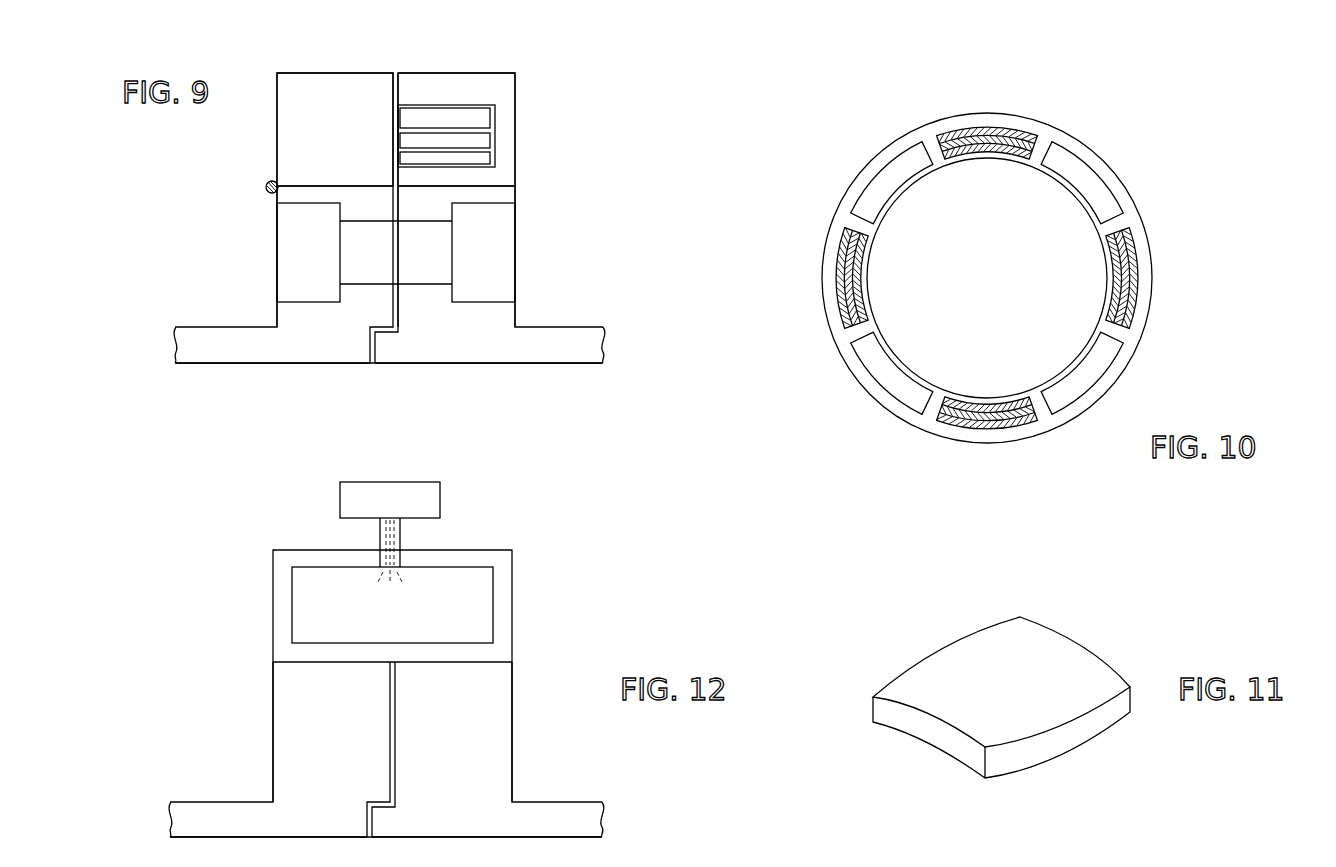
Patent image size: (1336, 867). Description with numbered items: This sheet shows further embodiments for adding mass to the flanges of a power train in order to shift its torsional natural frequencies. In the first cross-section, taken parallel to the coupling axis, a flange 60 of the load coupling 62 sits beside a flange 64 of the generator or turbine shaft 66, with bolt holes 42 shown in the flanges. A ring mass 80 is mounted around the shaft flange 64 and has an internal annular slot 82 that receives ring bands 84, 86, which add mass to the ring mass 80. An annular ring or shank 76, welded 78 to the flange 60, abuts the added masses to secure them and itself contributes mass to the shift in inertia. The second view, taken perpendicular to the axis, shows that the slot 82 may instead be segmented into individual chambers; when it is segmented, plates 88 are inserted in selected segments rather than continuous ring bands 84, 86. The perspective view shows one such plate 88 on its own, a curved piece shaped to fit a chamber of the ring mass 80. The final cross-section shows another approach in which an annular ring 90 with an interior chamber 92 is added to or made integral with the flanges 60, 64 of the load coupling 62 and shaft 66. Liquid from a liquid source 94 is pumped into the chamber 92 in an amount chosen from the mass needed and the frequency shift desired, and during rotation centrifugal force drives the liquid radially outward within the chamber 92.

In FIG. 9, the bolt holes 42 is at (303, 268).
In FIG. 9, the flange of the load coupling 60 is at (265, 246).
In FIG. 12, the flange of the load coupling 60 is at (321, 745).
In FIG. 9, the load coupling 62 is at (238, 357).
In FIG. 12, the load coupling 62 is at (210, 810).
In FIG. 9, the flange of the shaft 64 is at (487, 193).
In FIG. 12, the flange of the shaft 64 is at (438, 745).
In FIG. 9, the shaft 66 is at (568, 357).
In FIG. 12, the shaft 66 is at (573, 815).
In FIG. 9, the annular ring or shank 76 is at (325, 142).
In FIG. 9, the weld 78 is at (268, 183).
In FIG. 9, the ring mass 80 is at (498, 83).
In FIG. 10, the ring mass 80 is at (948, 115).
In FIG. 9, the internal annular slot 82 is at (485, 140).
In FIG. 10, the internal annular slot 82 is at (880, 182).
In FIG. 9, the ring band 84 is at (485, 117).
In FIG. 9, the ring band 86 is at (485, 158).
In FIG. 10, the plate 88 is at (1005, 123).
In FIG. 11, the plate 88 is at (991, 685).
In FIG. 12, the annular ring 90 is at (498, 592).
In FIG. 12, the interior chamber 92 is at (318, 600).
In FIG. 12, the liquid source 94 is at (435, 503).